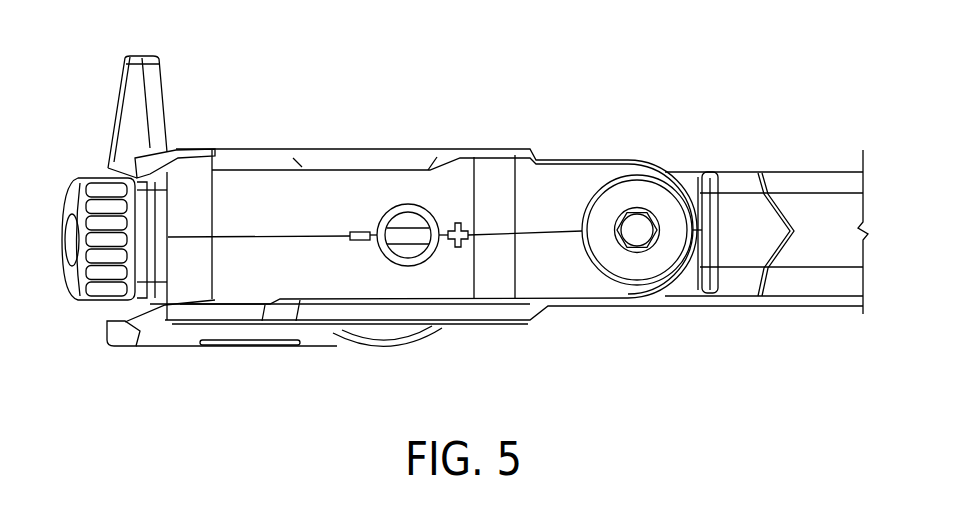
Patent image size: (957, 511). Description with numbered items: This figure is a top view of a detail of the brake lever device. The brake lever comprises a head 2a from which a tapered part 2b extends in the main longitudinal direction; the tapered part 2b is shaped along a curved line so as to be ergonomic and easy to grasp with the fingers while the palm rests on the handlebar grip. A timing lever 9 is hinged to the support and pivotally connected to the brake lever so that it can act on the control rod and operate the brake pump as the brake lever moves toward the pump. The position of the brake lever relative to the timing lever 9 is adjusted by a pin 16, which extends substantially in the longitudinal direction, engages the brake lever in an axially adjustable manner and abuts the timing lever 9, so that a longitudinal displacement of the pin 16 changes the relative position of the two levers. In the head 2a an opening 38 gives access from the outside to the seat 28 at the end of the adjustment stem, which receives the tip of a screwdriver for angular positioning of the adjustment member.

The head 2a is at (340, 178).
The tapered part 2b is at (742, 178).
The timing lever 9 is at (145, 105).
The pin 16 is at (128, 218).
The seat 28 is at (407, 218).
The opening 38 is at (433, 247).